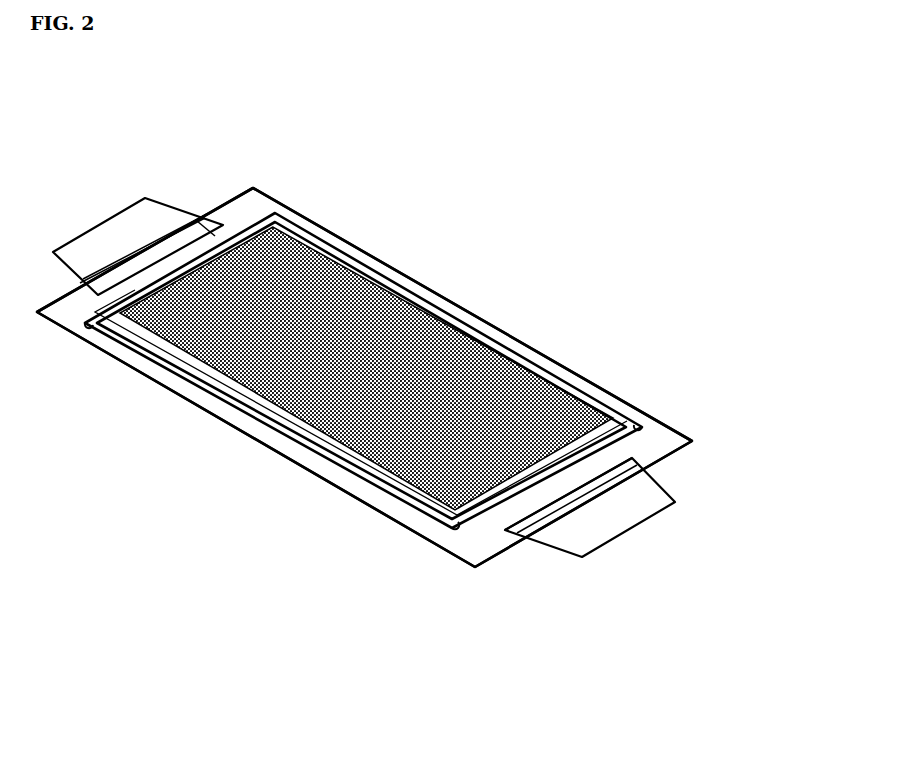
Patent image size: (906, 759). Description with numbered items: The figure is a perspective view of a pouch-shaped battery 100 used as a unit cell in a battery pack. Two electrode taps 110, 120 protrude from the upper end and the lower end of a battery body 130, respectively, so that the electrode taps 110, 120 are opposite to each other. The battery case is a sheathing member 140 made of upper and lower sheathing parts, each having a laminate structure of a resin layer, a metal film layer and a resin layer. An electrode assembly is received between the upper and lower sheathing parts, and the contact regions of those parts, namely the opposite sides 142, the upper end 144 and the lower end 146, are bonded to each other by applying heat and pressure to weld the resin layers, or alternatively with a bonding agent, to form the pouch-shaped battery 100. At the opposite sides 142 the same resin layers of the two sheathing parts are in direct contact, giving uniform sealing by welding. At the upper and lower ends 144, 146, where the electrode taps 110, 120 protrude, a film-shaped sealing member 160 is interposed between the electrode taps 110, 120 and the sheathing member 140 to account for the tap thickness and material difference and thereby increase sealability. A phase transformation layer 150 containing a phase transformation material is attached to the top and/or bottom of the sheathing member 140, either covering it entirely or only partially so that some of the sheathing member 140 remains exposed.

The pouch-shaped battery 100 is at (173, 143).
The electrode tap 110 is at (117, 228).
The electrode tap 120 is at (640, 528).
The battery body 130 is at (463, 322).
The sheathing member 140 is at (673, 434).
The opposite sides 142 is at (253, 204).
The upper end 144 is at (358, 492).
The lower end 146 is at (488, 540).
The phase transformation layer 150 is at (543, 392).
The film-shaped sealing member 160 is at (632, 460).